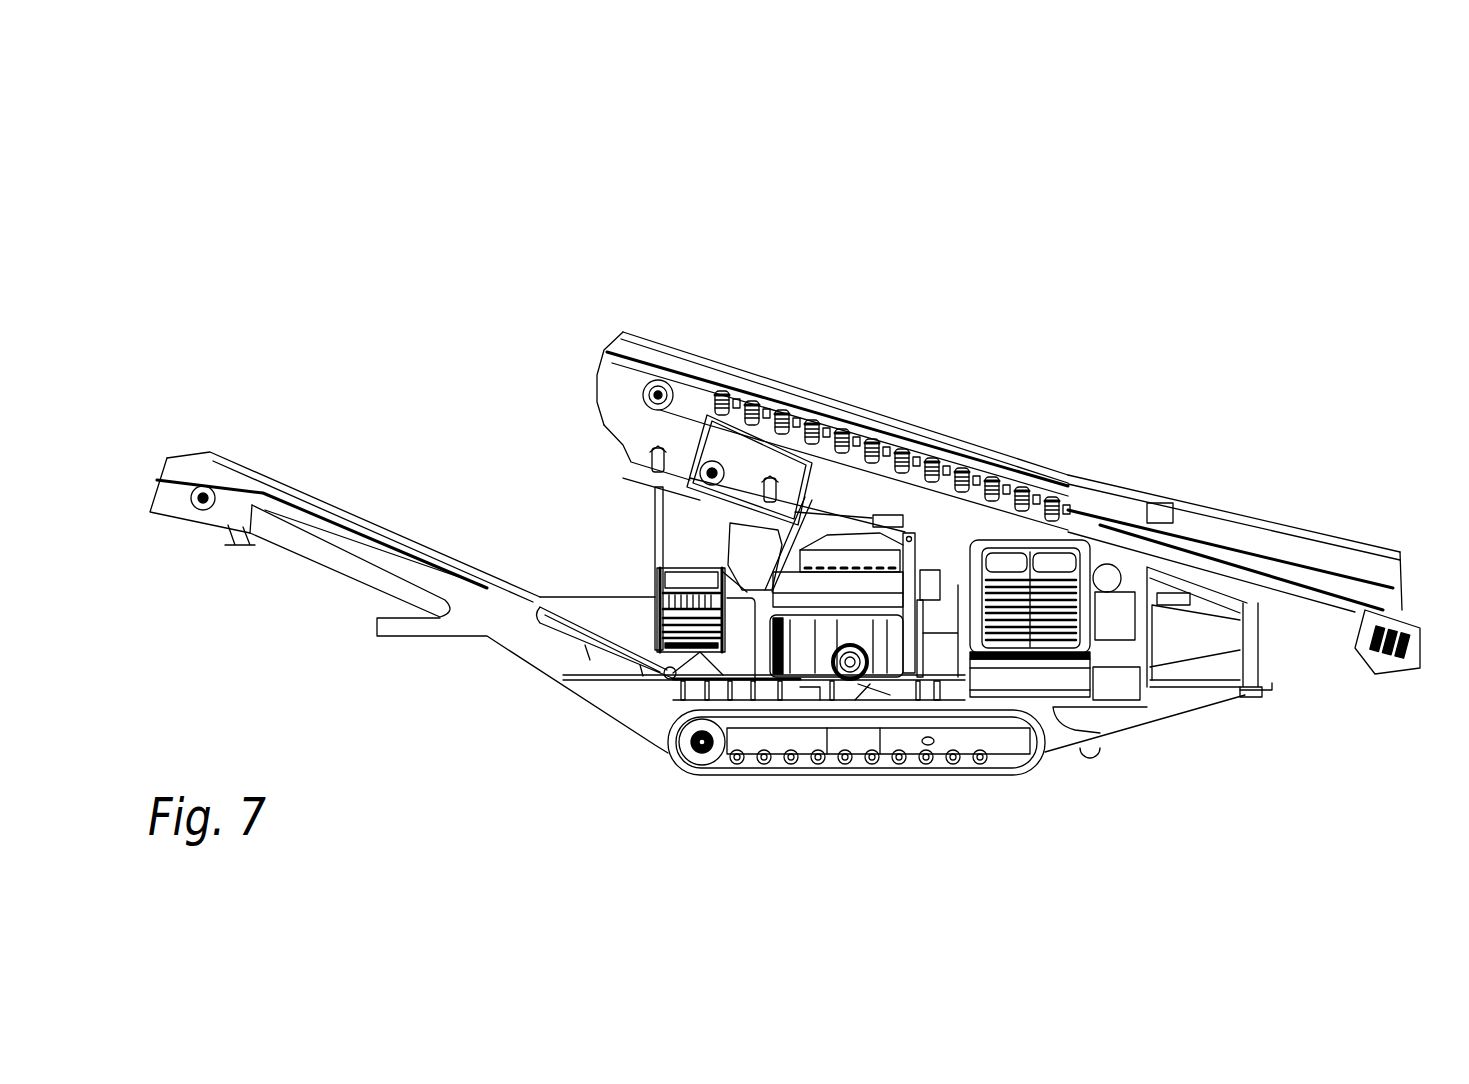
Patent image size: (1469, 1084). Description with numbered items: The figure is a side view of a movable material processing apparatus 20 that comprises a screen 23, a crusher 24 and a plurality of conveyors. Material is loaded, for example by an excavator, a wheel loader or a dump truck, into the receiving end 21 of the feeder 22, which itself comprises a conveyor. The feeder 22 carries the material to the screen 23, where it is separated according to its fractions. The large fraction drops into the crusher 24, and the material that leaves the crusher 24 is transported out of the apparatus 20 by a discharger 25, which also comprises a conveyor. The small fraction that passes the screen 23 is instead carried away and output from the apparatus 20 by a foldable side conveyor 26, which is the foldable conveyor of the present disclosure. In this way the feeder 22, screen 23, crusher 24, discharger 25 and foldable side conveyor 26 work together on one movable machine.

The movable material processing apparatus 20 is at (336, 265).
The receiving end 21 is at (1279, 496).
The feeder 22 is at (811, 349).
The screen 23 is at (572, 381).
The crusher 24 is at (909, 525).
The discharger 25 is at (410, 498).
The foldable side conveyor 26 is at (627, 569).